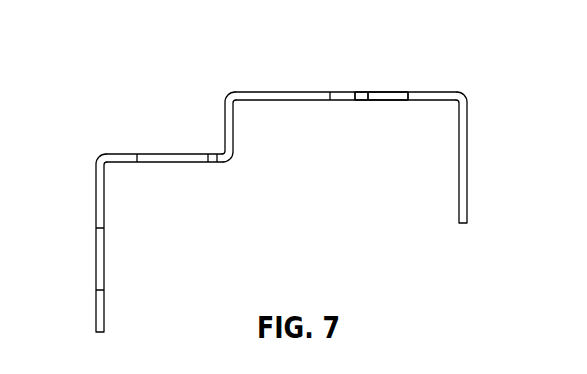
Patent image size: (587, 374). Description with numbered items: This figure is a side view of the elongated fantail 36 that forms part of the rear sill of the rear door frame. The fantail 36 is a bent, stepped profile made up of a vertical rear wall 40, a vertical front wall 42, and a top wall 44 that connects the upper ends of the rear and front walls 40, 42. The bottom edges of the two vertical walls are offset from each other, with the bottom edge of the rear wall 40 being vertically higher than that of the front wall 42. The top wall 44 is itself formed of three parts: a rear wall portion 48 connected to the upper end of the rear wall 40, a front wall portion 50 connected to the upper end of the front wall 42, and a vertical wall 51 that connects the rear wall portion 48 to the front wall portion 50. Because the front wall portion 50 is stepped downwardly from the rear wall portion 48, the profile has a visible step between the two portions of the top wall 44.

The fantail 36 is at (137, 57).
The rear wall 40 is at (464, 173).
The front wall 42 is at (96, 252).
The top wall 44 is at (262, 92).
The rear wall portion 48 is at (372, 95).
The front wall portion 50 is at (150, 155).
The vertical wall 51 is at (226, 117).